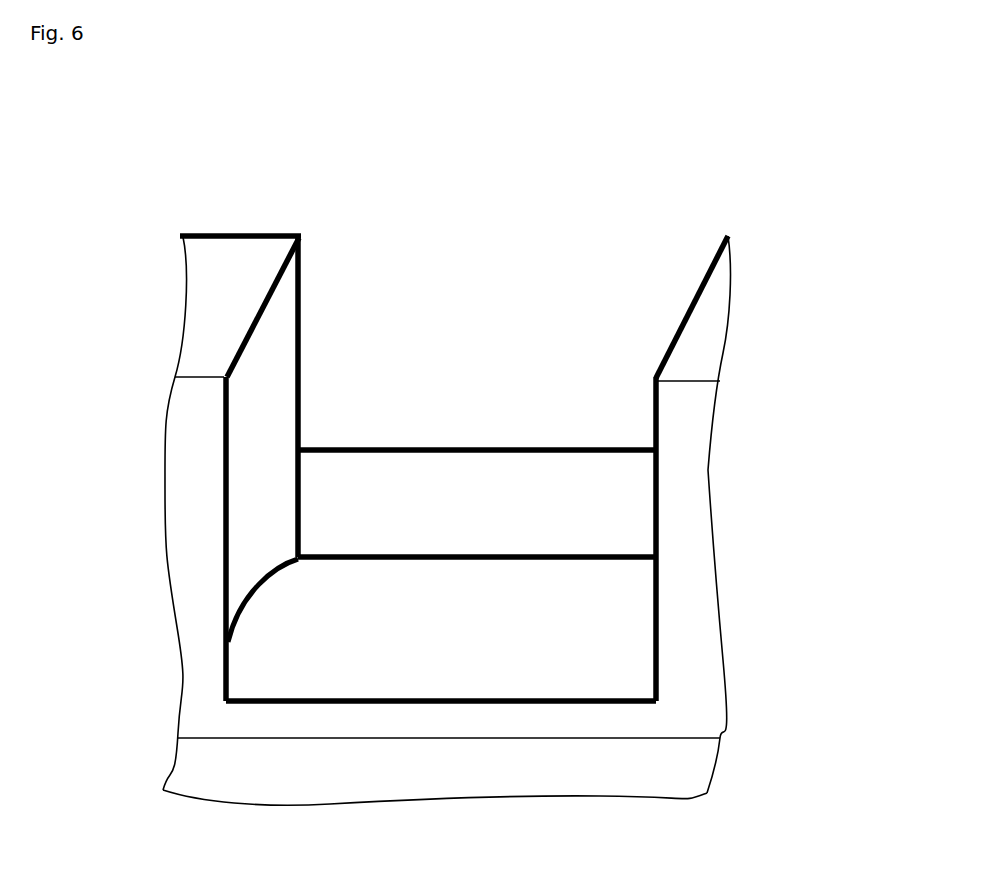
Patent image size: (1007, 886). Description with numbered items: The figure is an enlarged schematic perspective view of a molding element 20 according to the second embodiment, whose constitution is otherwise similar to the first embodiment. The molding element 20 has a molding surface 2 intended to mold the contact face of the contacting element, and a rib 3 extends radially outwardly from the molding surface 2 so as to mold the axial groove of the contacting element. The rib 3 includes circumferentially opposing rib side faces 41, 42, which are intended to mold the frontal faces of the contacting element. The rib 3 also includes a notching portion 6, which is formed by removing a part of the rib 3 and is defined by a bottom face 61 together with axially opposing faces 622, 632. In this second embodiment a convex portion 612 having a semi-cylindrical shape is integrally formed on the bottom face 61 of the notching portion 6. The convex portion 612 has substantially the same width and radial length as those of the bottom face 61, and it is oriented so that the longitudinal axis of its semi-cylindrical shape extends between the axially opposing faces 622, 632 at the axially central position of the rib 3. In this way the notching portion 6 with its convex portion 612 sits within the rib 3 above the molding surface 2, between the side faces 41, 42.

The molding surface 2 is at (279, 791).
The rib 3 is at (713, 357).
The notching portion 6 is at (477, 422).
The molding element 20 is at (344, 174).
The rib side face 41 is at (198, 548).
The rib side face 42 is at (216, 232).
The bottom face 61 is at (402, 615).
The convex portion 612 is at (508, 662).
The axially opposing face 622 is at (268, 427).
The axially opposing face 632 is at (652, 442).